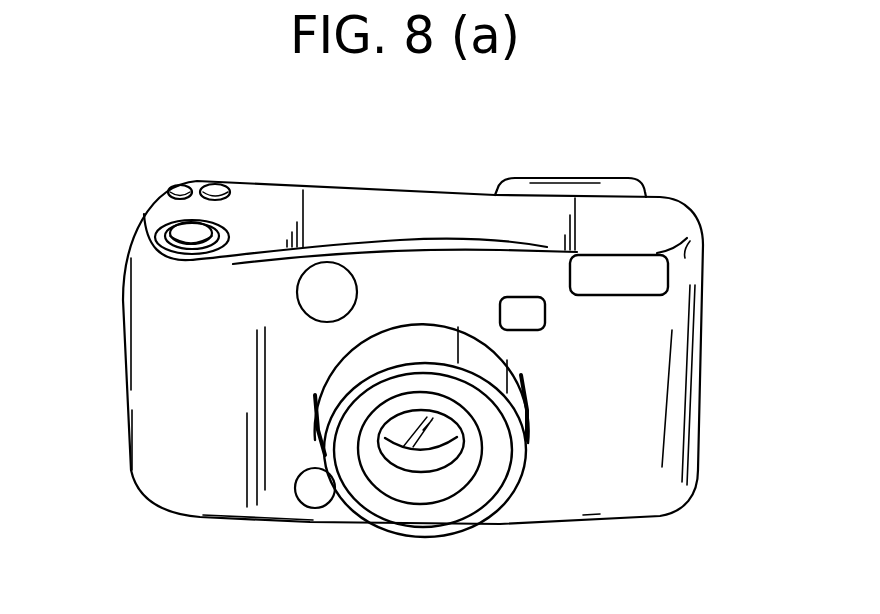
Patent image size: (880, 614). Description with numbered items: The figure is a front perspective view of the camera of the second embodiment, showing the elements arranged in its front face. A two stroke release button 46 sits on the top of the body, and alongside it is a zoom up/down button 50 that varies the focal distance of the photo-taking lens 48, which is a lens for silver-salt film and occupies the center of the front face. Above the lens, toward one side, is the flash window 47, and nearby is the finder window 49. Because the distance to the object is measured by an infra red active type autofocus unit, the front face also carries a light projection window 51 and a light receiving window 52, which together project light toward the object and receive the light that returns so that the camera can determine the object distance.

The two stroke release button 46 is at (173, 225).
The flash window 47 is at (655, 274).
The photo-taking lens 48 is at (437, 443).
The finder window 49 is at (545, 313).
The zoom up/down button 50 is at (223, 182).
The light projection window 51 is at (303, 300).
The light receiving window 52 is at (310, 505).